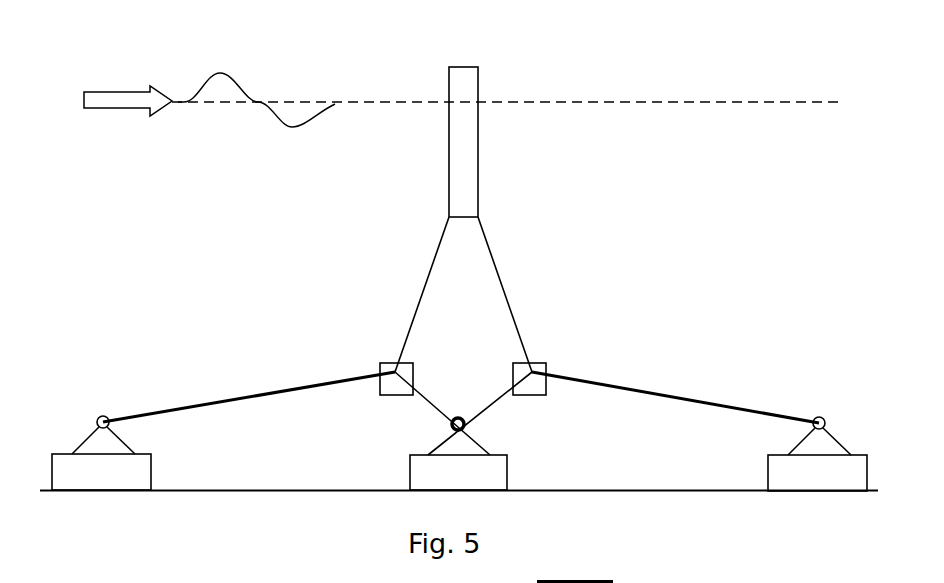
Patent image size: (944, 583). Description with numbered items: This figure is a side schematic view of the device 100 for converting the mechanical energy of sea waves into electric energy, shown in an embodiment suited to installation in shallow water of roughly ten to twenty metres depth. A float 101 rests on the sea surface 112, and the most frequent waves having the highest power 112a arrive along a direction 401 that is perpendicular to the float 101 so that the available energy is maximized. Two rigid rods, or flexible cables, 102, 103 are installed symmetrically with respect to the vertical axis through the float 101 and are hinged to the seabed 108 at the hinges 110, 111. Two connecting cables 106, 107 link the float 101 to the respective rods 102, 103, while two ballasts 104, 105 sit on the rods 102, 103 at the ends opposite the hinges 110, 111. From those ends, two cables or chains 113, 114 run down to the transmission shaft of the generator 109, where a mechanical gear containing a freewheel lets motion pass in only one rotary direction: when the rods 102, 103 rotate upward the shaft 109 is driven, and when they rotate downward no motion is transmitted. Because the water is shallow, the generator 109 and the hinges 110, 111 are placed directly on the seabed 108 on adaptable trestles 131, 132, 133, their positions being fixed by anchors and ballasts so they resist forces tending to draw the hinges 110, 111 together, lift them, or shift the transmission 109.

The device 100 is at (128, 226).
The float 101 is at (458, 62).
The rigid rod 102 is at (188, 405).
The rigid rod 103 is at (742, 405).
The ballast 104 is at (373, 368).
The ballast 105 is at (527, 372).
The connecting cable 106 is at (435, 250).
The connecting cable 107 is at (485, 253).
The seabed 108 is at (300, 488).
The transmission shaft of a generator 109 is at (422, 413).
The hinge 110 is at (100, 413).
The hinge 111 is at (822, 416).
The sea surface 112 is at (628, 102).
The waves having the highest power 112a is at (247, 83).
The chain 113 is at (432, 380).
The chain 114 is at (492, 380).
The adaptable trestle 131 is at (67, 448).
The adaptable trestle 132 is at (847, 443).
The adaptable trestle 133 is at (510, 468).
The direction 401 is at (112, 83).